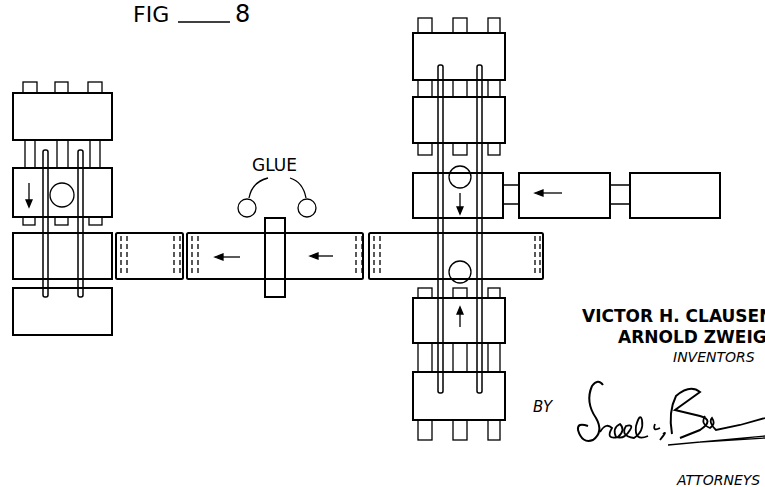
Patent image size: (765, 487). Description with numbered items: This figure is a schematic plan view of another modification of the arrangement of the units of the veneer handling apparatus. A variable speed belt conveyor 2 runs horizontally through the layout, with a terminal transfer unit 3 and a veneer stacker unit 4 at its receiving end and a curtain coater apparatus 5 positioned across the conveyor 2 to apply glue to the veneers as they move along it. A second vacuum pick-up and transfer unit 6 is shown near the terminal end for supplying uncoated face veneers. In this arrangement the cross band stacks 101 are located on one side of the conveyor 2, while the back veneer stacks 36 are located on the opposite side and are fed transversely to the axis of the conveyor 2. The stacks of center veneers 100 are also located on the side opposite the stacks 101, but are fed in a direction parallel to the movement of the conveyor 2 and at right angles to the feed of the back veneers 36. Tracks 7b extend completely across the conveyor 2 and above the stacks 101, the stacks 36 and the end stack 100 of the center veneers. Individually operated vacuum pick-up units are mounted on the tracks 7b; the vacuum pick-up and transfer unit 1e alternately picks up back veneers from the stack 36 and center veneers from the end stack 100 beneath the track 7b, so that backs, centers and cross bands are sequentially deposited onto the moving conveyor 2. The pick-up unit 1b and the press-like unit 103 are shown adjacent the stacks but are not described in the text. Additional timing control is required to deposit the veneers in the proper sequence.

The variable speed belt conveyor unit 2 is at (334, 229).
The terminal transfer unit 3 is at (105, 240).
The veneer stacker unit 4 is at (103, 316).
The curtain coater apparatus 5 is at (272, 293).
The second vacuum pick-up and transfer unit 6 is at (74, 196).
The back veneer stacks 36 is at (500, 72).
The stacks of center veneers 100 is at (417, 190).
The cross band stacks 101 is at (425, 387).
The left press head 103 is at (107, 132).
The glue spot on lower web 1b is at (448, 272).
The vacuum pick-up and transfer unit 1e is at (472, 176).
The tracks 7b is at (485, 267).